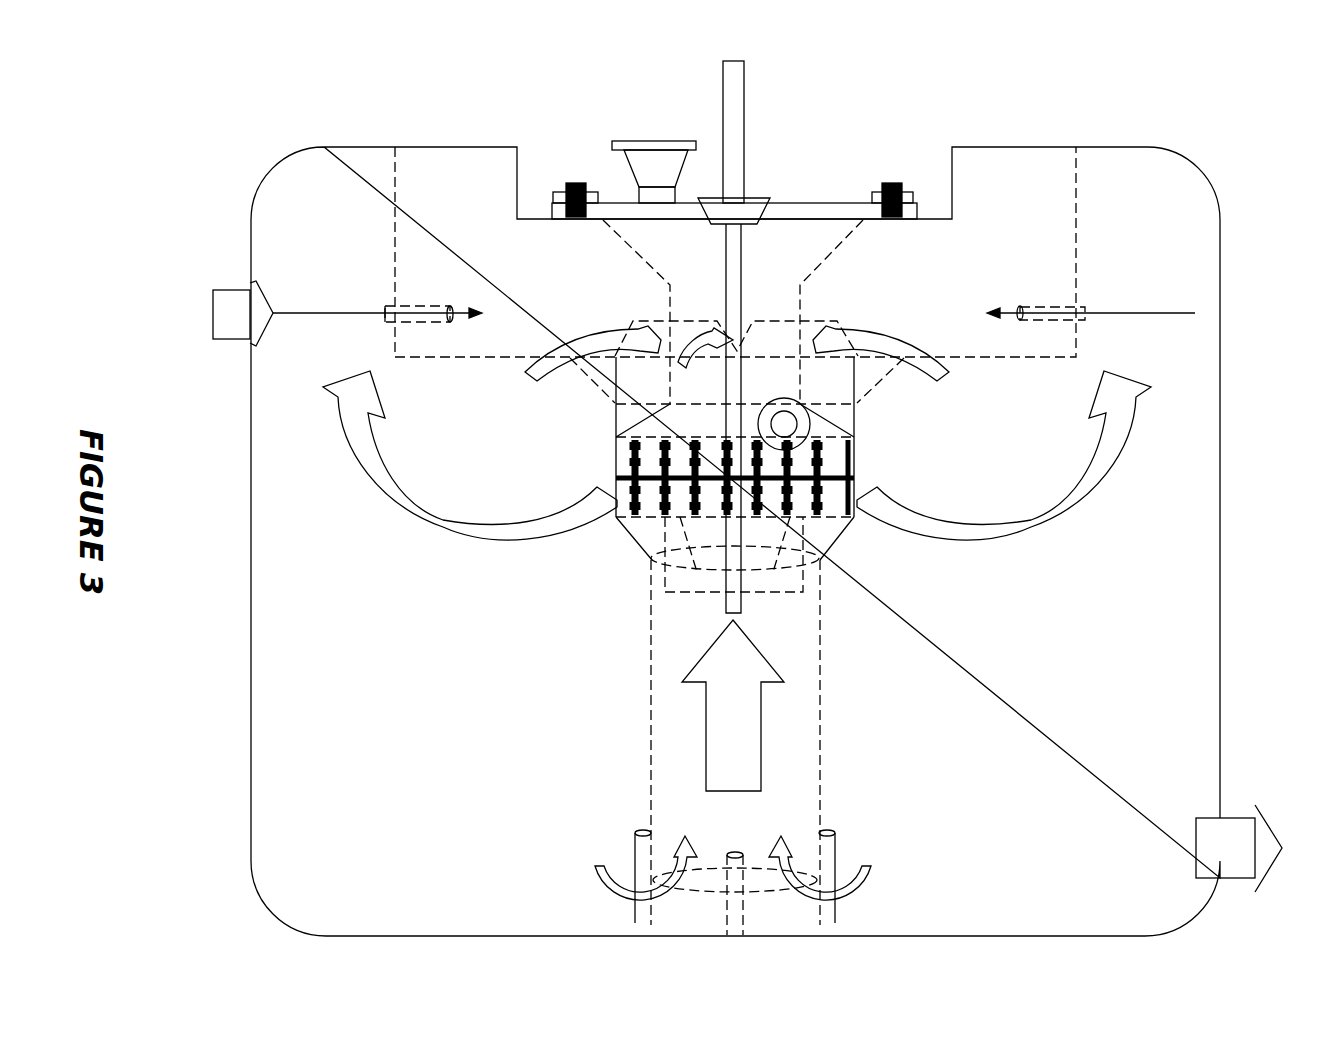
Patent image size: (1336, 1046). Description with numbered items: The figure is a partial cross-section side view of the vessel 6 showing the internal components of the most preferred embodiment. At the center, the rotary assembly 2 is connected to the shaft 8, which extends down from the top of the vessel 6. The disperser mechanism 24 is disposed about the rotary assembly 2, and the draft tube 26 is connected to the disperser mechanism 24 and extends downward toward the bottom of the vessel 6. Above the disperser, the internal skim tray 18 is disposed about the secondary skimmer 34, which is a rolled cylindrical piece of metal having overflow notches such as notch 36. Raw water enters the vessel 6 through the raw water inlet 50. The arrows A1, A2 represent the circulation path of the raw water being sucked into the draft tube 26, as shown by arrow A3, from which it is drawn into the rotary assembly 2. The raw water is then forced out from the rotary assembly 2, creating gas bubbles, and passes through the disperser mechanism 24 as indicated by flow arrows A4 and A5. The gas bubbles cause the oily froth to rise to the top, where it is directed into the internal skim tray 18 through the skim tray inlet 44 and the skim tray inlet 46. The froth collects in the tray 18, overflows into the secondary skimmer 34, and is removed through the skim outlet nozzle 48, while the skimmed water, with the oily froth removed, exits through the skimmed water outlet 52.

The rotary assembly 2 is at (771, 122).
The vessel 6 is at (1143, 145).
The shaft 8 is at (743, 187).
The internal skim tray 18 is at (940, 355).
The disperser mechanism 24 is at (857, 457).
The draft tube 26 is at (820, 707).
The secondary skimmer 34 is at (890, 336).
The overflow V notch 36 is at (633, 323).
The skim tray inlet 44 is at (387, 308).
The skim tray inlet 46 is at (1085, 308).
The skim outlet nozzle 48 is at (798, 425).
The raw water inlet 50 is at (237, 292).
The skimmed water outlet 52 is at (1223, 818).
The flow arrow A1 is at (873, 868).
The flow arrow A2 is at (593, 868).
The flow arrow A3 is at (743, 759).
The flow arrow A4 is at (508, 540).
The flow arrow A5 is at (938, 533).